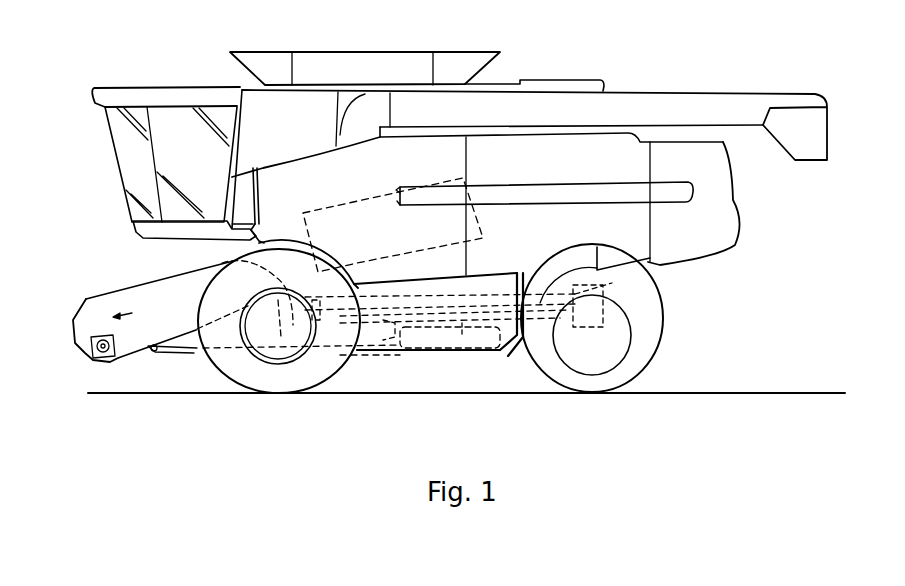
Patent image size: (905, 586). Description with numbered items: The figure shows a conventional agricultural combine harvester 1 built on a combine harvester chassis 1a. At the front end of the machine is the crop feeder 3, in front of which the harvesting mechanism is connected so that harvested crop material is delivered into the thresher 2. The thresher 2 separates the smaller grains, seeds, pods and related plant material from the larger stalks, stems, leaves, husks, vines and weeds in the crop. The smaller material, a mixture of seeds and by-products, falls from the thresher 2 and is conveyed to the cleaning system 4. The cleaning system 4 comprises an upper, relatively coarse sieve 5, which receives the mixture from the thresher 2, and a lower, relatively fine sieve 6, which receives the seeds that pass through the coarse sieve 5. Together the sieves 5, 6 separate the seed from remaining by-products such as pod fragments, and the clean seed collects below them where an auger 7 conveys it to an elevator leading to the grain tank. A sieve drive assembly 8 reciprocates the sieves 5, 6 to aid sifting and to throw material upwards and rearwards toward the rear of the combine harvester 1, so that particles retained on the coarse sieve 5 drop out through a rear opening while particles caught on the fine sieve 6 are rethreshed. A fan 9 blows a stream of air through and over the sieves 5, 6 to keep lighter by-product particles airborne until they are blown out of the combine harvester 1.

The agricultural combine harvester 1 is at (736, 37).
The combine harvester chassis 1a is at (507, 355).
The thresher 2 is at (333, 207).
The crop feeder 3 is at (78, 291).
The cleaning system 4 is at (536, 283).
The coarse sieve 5 is at (421, 297).
The fine sieve 6 is at (395, 323).
The auger 7 is at (438, 356).
The sieve drive assembly 8 is at (420, 333).
The fan 9 is at (290, 340).